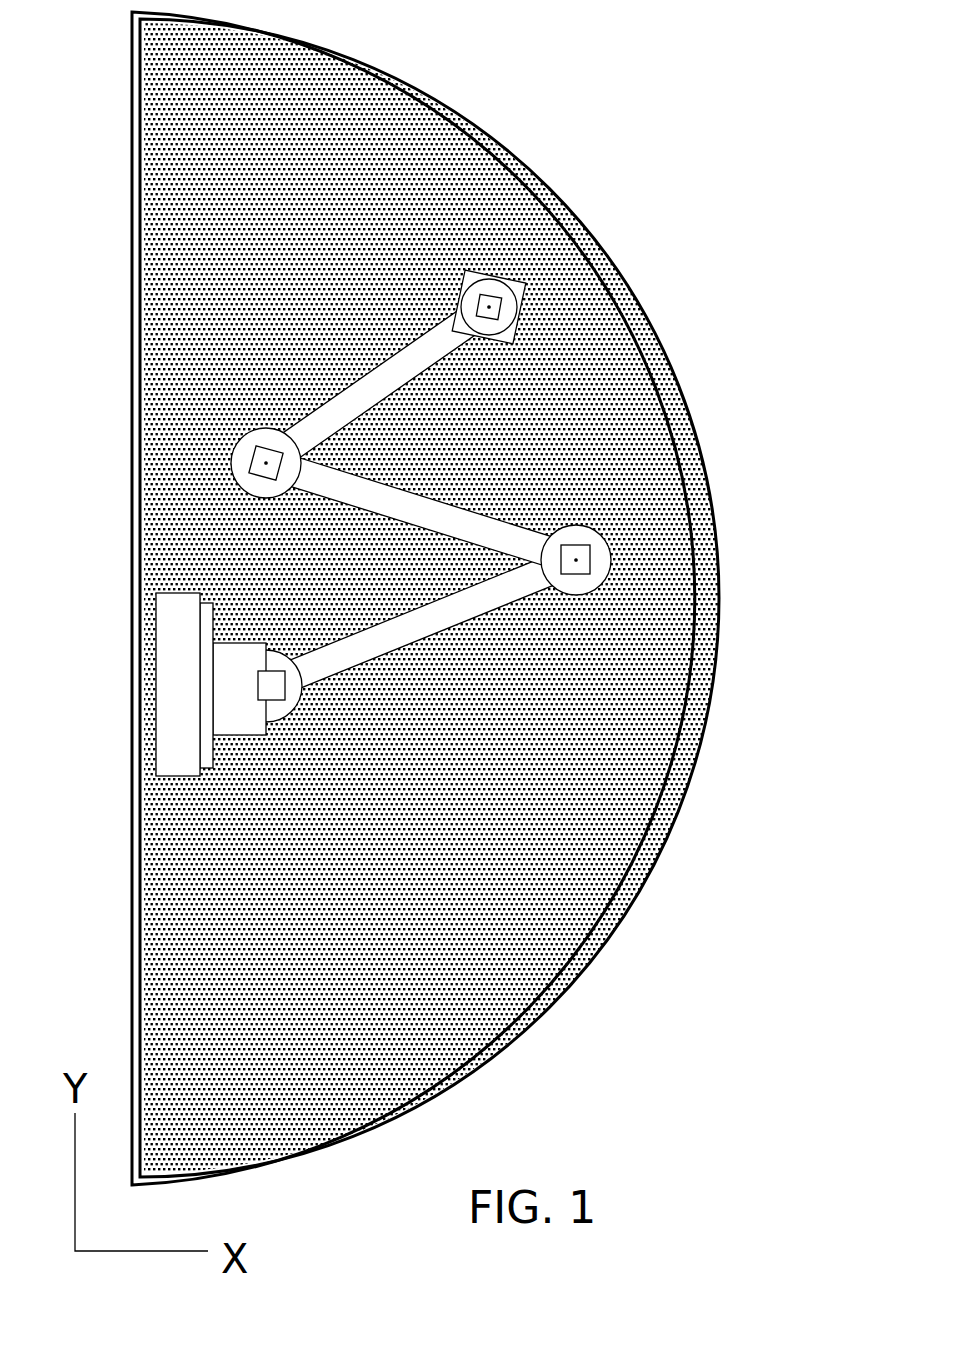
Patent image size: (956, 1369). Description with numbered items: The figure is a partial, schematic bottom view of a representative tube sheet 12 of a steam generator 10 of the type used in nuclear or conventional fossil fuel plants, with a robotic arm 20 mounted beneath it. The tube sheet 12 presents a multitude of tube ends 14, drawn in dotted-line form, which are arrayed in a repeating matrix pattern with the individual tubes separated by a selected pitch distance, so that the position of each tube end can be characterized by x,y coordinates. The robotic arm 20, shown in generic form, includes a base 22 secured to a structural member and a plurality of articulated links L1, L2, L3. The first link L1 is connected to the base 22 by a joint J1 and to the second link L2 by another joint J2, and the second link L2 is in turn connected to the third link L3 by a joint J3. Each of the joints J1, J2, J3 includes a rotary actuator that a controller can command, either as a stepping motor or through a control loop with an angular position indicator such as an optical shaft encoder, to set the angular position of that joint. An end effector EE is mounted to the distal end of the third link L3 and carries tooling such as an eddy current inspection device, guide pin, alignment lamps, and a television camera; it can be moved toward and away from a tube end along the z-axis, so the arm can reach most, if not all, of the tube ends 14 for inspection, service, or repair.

The steam generator 10 is at (511, 114).
The tube sheet 12 is at (590, 253).
The tube ends 14 is at (715, 560).
The robotic arm 20 is at (167, 472).
The base 22 is at (182, 662).
The end effector EE is at (513, 277).
The joint J1 is at (283, 667).
The joint J2 is at (545, 540).
The joint J3 is at (278, 442).
The link L1 is at (420, 623).
The link L2 is at (421, 512).
The link L3 is at (377, 385).